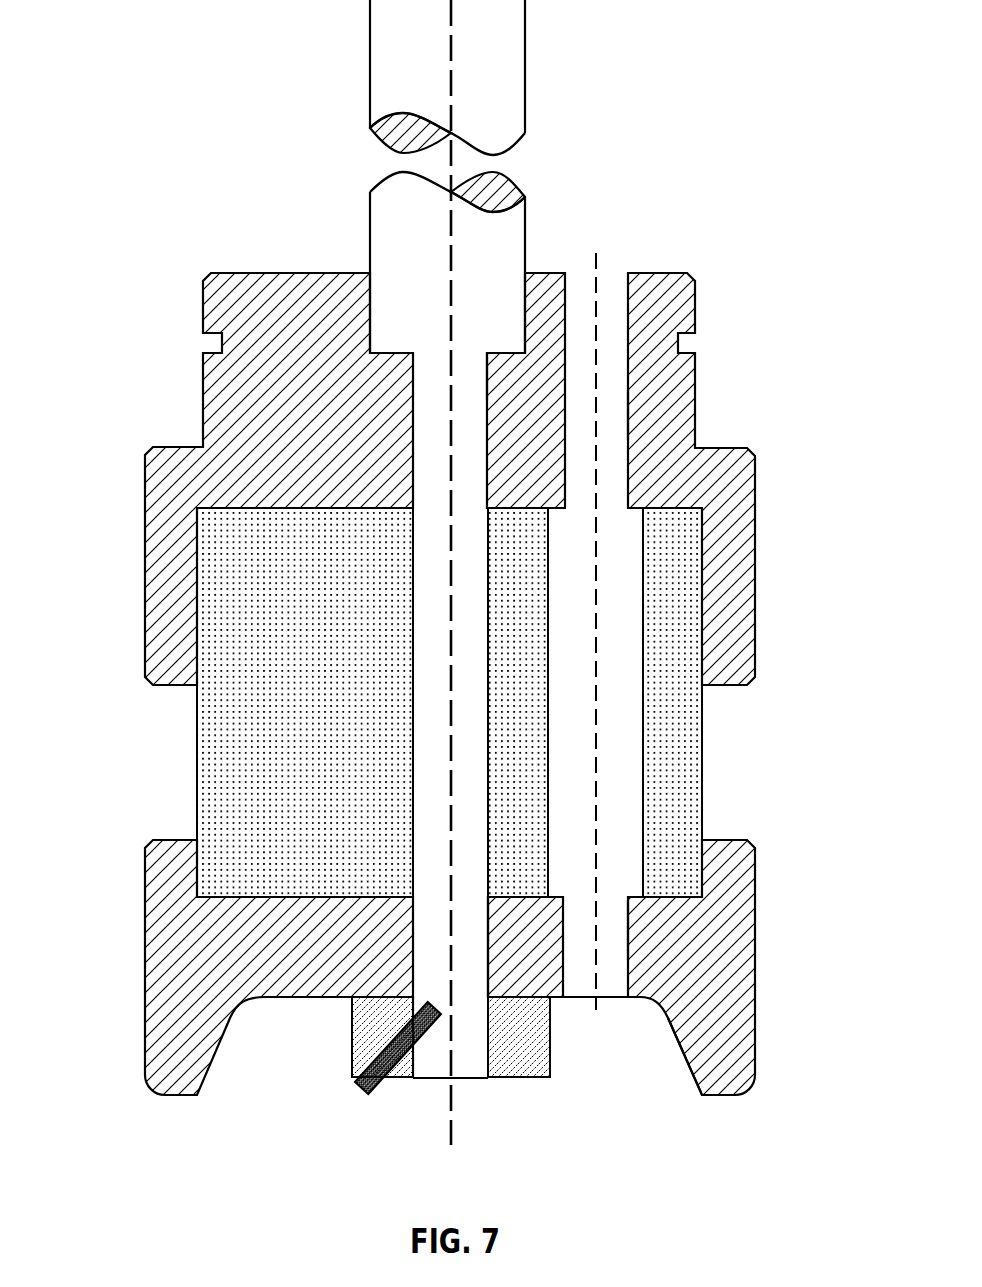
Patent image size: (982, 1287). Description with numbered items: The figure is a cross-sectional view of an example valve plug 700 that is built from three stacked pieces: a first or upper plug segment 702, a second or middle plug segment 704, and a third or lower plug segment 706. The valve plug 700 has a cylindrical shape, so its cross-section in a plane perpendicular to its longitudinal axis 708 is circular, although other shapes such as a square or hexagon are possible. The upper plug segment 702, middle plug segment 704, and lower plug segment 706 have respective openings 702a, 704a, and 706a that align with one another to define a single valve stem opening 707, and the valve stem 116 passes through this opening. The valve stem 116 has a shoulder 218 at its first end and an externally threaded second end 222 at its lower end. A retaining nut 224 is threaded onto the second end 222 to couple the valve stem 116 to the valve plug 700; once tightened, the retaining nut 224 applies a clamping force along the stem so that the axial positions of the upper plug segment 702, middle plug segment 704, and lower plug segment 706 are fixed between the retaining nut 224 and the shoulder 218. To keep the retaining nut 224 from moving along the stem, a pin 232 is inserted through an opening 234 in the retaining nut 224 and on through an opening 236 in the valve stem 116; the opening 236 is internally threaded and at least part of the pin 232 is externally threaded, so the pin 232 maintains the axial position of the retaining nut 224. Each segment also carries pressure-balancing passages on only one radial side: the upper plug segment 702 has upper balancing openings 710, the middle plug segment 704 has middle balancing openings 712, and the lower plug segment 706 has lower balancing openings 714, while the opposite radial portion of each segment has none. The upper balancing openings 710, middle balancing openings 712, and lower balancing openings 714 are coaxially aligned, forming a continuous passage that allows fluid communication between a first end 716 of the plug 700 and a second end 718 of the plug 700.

The valve plug 700 is at (129, 62).
The valve stem 116 is at (528, 70).
The longitudinal axis 708 is at (450, 268).
The shoulder 218 is at (505, 352).
The upper plug segment 702 is at (145, 468).
The opening 702a is at (490, 388).
The first end 716 is at (657, 273).
The upper balancing openings 710 is at (627, 437).
The middle plug segment 704 is at (197, 725).
The opening 704a is at (490, 625).
The middle balancing openings 712 is at (643, 847).
The lower plug segment 706 is at (145, 945).
The opening 706a is at (490, 920).
The lower balancing openings 714 is at (628, 948).
The valve stem opening 707 is at (490, 976).
The opening in the retaining nut 234 is at (397, 1037).
The retaining nut 224 is at (550, 1057).
The second end 222 is at (477, 1083).
The opening in the valve stem 236 is at (432, 1015).
The pin 232 is at (368, 1082).
The second end 718 is at (718, 1097).